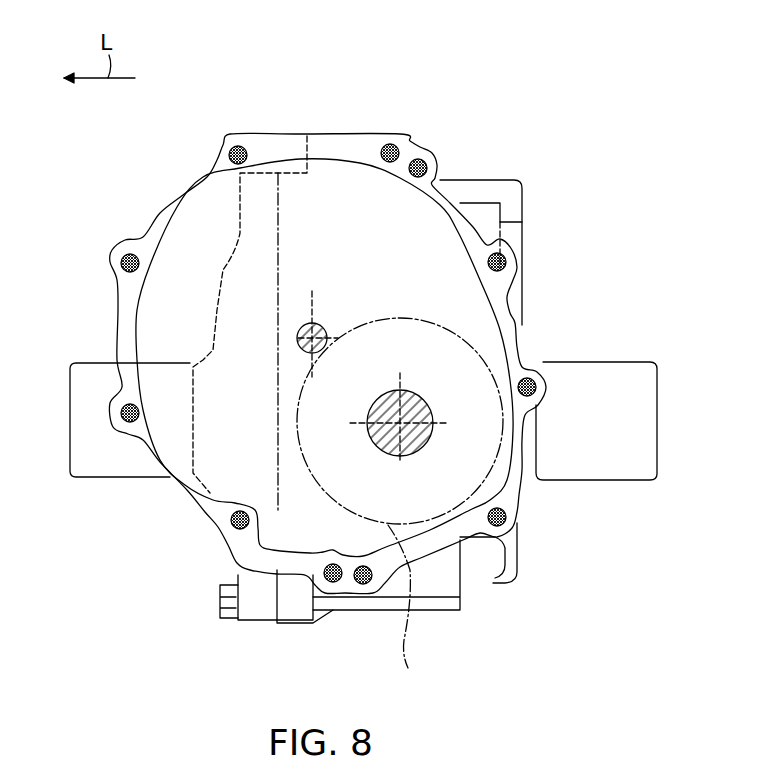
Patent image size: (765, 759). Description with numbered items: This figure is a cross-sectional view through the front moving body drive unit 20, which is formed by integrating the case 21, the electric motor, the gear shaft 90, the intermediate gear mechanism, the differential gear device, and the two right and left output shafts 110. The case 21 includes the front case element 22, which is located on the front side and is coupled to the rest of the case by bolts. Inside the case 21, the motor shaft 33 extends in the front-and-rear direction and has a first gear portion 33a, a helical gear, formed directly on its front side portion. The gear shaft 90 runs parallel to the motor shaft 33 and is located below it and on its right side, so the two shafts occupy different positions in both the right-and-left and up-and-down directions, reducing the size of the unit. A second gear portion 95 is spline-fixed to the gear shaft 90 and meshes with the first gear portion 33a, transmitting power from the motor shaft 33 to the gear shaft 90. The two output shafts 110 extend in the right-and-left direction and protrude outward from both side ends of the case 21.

The front moving body drive unit 20 is at (397, 102).
The case 21 is at (265, 133).
The front case element 22 is at (418, 150).
The motor shaft 33 is at (318, 322).
The first gear portion 33a is at (340, 333).
The gear shaft 90 is at (422, 391).
The second gear portion 95 is at (407, 611).
The output shafts 110 is at (120, 478).